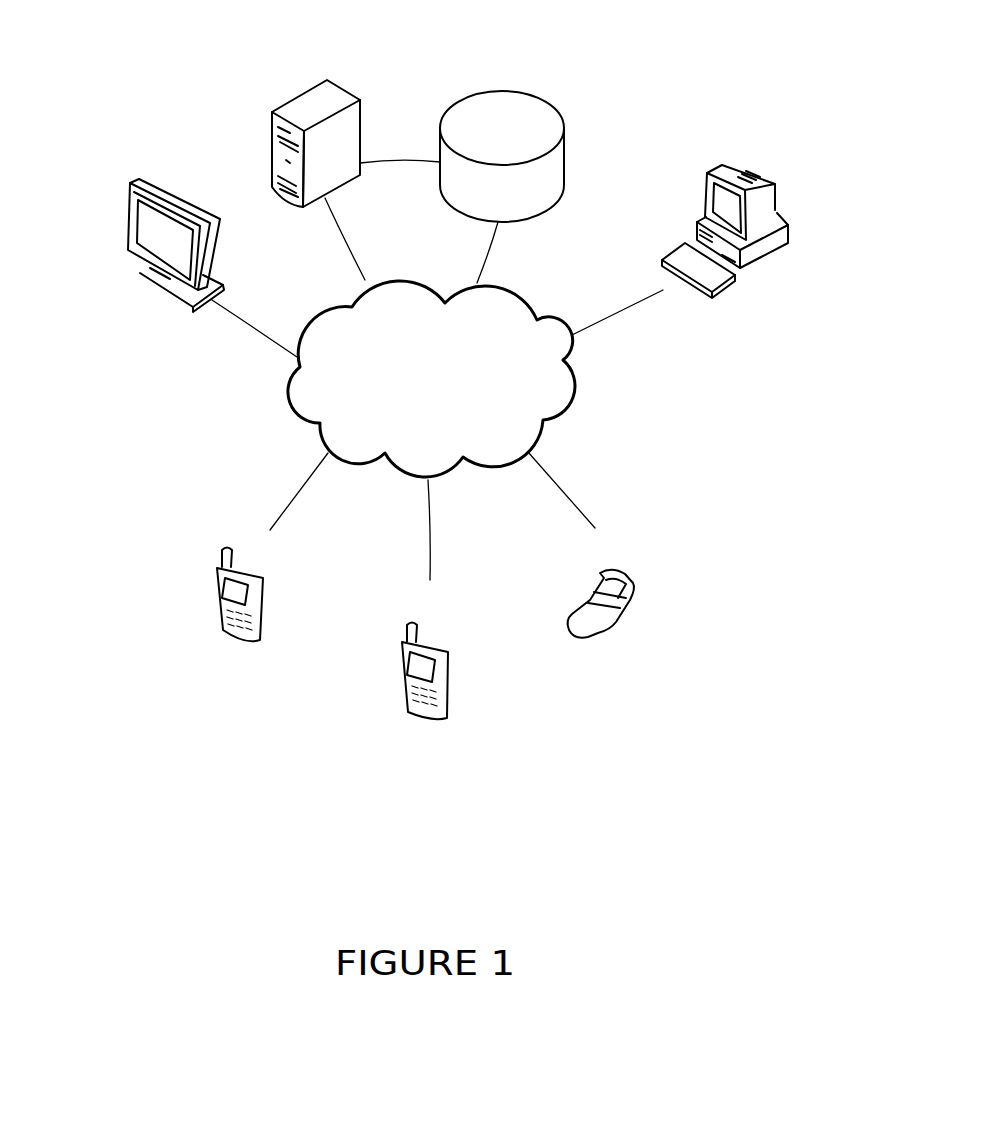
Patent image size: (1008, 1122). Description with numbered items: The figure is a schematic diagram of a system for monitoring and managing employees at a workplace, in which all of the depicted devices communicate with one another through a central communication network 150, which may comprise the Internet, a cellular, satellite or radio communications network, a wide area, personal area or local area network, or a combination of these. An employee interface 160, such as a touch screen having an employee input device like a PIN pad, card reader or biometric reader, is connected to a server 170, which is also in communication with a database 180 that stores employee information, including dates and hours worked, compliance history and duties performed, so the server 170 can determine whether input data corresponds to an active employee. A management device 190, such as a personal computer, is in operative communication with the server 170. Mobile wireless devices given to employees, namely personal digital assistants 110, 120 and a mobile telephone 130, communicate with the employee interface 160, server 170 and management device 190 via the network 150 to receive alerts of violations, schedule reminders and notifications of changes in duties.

The personal digital assistant 110 is at (197, 602).
The personal digital assistant 120 is at (403, 687).
The mobile telephone 130 is at (620, 627).
The communication network 150 is at (580, 393).
The employee interface 160 is at (128, 208).
The server 170 is at (297, 93).
The database 180 is at (563, 120).
The management device 190 is at (788, 233).